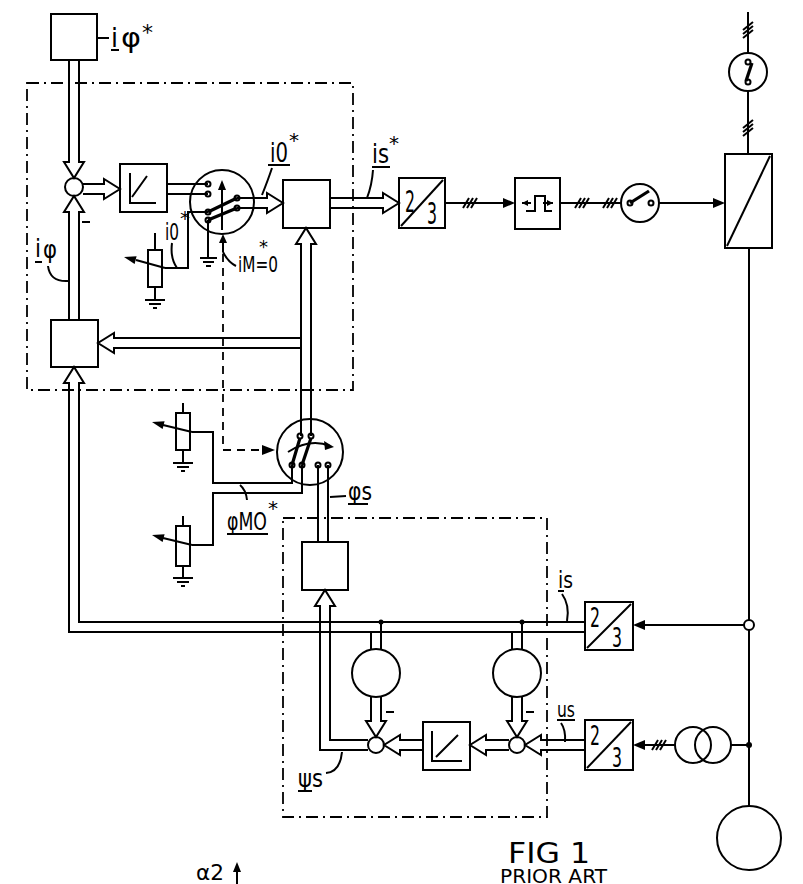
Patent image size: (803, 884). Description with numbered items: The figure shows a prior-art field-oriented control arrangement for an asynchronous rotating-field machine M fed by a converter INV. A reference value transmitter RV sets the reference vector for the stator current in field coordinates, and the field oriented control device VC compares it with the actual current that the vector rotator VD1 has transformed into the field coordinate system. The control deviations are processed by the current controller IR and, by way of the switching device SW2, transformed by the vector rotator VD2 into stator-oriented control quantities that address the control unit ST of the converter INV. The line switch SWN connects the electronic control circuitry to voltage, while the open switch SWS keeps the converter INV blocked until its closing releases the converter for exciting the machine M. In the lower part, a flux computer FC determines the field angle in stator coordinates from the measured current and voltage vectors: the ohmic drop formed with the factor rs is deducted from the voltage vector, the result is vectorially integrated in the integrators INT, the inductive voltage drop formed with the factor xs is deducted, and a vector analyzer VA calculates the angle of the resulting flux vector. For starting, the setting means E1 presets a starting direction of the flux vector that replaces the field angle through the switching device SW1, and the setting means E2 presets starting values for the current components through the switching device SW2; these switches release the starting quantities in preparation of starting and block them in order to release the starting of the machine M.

The reference value transmitter RV is at (74, 37).
The field oriented control device VC is at (291, 88).
The current controller IR is at (148, 166).
The switching device SW2 is at (212, 171).
The vector rotator VD2 is at (306, 204).
The control unit ST is at (537, 178).
The switch SWS is at (643, 184).
The line switch SWN is at (732, 61).
The inverter INV is at (738, 250).
The vector rotator VD1 is at (74, 343).
The setting means E2 is at (148, 277).
The setting means E1 is at (168, 437).
The switching device SW1 is at (340, 440).
The vector analyzer VA is at (325, 566).
The flux computer FC is at (518, 516).
The integrators INT is at (441, 722).
The inductive voltage drop factor xs is at (376, 673).
The ohmic drop factor rs is at (517, 673).
The motor M is at (749, 838).